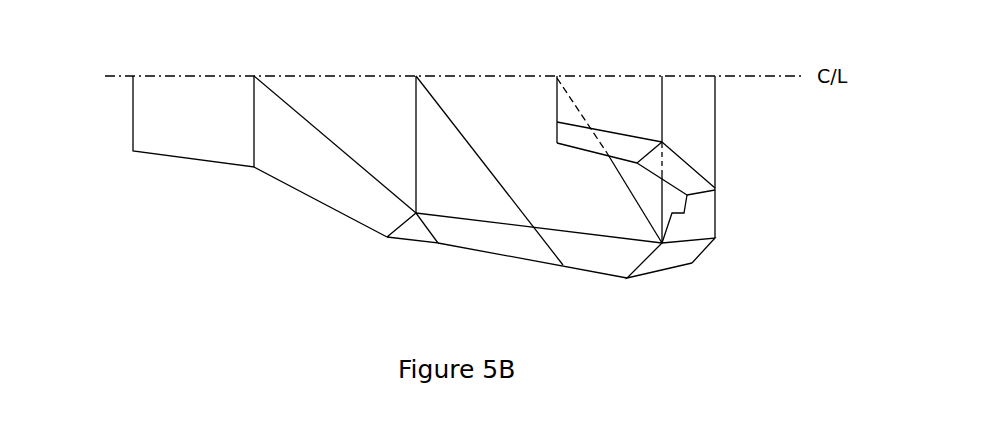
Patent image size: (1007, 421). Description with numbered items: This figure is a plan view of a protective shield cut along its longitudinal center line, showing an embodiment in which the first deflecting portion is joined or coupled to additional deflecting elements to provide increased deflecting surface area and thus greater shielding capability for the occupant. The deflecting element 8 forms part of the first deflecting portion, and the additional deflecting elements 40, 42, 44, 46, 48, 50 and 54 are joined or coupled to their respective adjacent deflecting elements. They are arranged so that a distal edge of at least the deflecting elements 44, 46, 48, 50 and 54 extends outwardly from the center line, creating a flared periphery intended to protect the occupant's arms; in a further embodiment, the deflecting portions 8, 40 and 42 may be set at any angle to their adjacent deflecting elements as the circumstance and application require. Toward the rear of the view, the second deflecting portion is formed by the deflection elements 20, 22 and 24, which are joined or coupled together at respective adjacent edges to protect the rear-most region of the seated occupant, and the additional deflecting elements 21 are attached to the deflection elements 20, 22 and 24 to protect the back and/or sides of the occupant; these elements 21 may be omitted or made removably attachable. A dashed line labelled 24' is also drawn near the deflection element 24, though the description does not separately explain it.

The deflecting element 8 is at (472, 100).
The deflection element 20 is at (700, 257).
The additional deflecting element 21 is at (567, 133).
The deflection element 22 is at (715, 158).
The deflection element 24 is at (746, 157).
The trailing portion alternative 24' is at (615, 90).
The deflecting element 40 is at (430, 120).
The deflecting element 42 is at (340, 97).
The deflecting element 44 is at (605, 257).
The deflecting element 46 is at (495, 238).
The deflecting element 48 is at (412, 228).
The deflecting element 50 is at (318, 173).
The deflecting element 54 is at (200, 100).